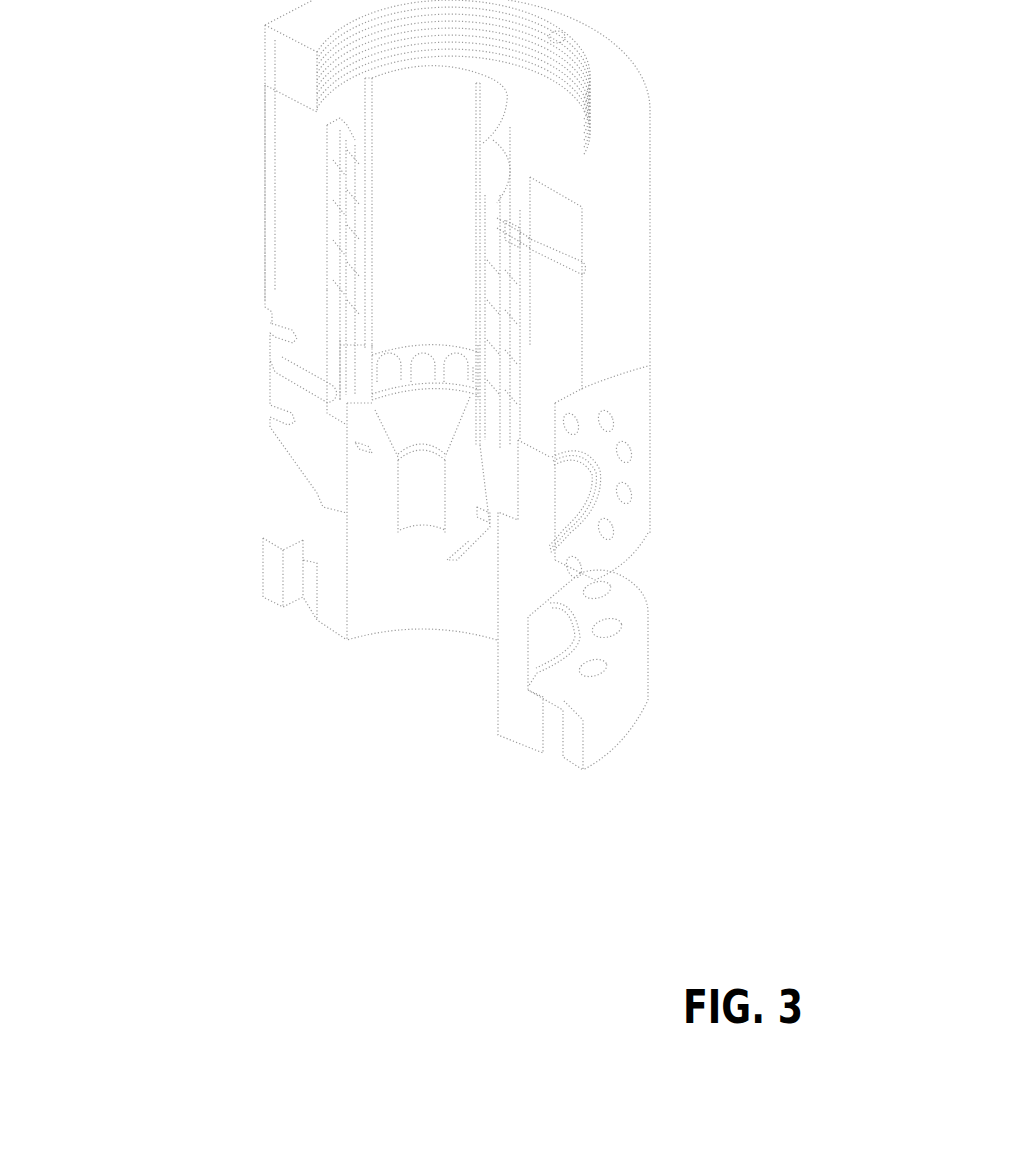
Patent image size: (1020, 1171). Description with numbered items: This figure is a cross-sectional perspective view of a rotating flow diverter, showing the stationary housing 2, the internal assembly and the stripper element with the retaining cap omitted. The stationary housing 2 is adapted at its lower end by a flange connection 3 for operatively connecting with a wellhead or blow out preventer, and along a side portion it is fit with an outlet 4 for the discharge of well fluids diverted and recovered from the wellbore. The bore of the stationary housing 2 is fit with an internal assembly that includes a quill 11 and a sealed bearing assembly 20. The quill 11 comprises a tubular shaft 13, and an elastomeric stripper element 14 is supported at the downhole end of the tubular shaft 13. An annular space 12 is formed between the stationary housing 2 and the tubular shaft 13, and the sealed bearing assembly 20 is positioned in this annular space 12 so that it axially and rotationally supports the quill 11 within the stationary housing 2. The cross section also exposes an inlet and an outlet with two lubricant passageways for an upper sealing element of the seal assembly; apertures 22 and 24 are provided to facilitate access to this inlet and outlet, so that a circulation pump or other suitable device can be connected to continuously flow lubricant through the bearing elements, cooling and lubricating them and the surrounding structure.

The stationary housing 2 is at (622, 152).
The flange connection 3 is at (610, 722).
The outlet 4 is at (565, 487).
The quill 11 is at (434, 152).
The annular space 12 is at (518, 217).
The tubular shaft 13 is at (438, 83).
The elastomeric stripper element 14 is at (385, 468).
The sealed bearing assembly 20 is at (372, 155).
The aperture 22 is at (280, 100).
The aperture 24 is at (580, 267).